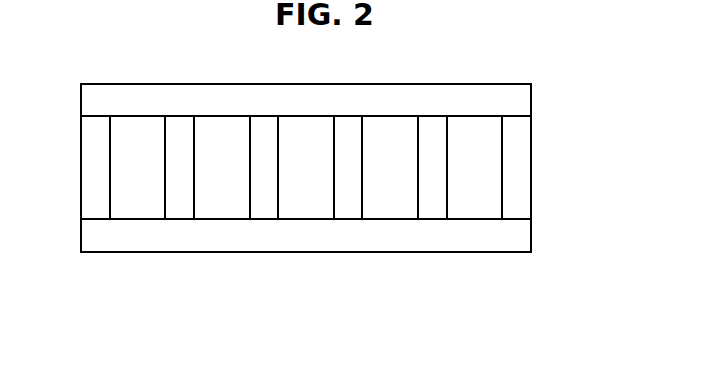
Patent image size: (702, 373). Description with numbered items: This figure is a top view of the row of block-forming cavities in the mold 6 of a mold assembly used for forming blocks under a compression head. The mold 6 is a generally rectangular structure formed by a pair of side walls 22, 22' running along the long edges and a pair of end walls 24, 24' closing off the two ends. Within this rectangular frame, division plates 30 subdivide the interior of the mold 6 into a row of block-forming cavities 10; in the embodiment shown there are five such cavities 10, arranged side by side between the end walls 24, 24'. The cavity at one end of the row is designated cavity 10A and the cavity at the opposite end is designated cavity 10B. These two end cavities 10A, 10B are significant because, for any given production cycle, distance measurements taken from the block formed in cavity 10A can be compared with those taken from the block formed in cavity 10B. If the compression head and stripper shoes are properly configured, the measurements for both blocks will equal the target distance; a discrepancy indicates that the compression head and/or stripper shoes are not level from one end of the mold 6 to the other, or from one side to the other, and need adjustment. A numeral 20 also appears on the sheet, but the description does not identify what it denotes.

The mold 6 is at (486, 283).
The sheet 20 is at (50, 5).
The side wall 22 is at (306, 65).
The side wall 22' is at (306, 287).
The end wall 24 is at (62, 167).
The end wall 24' is at (548, 167).
The block-forming cavity 10 is at (223, 125).
The cavity 10A is at (143, 207).
The cavity 10B is at (470, 130).
The division plate 30 is at (262, 209).